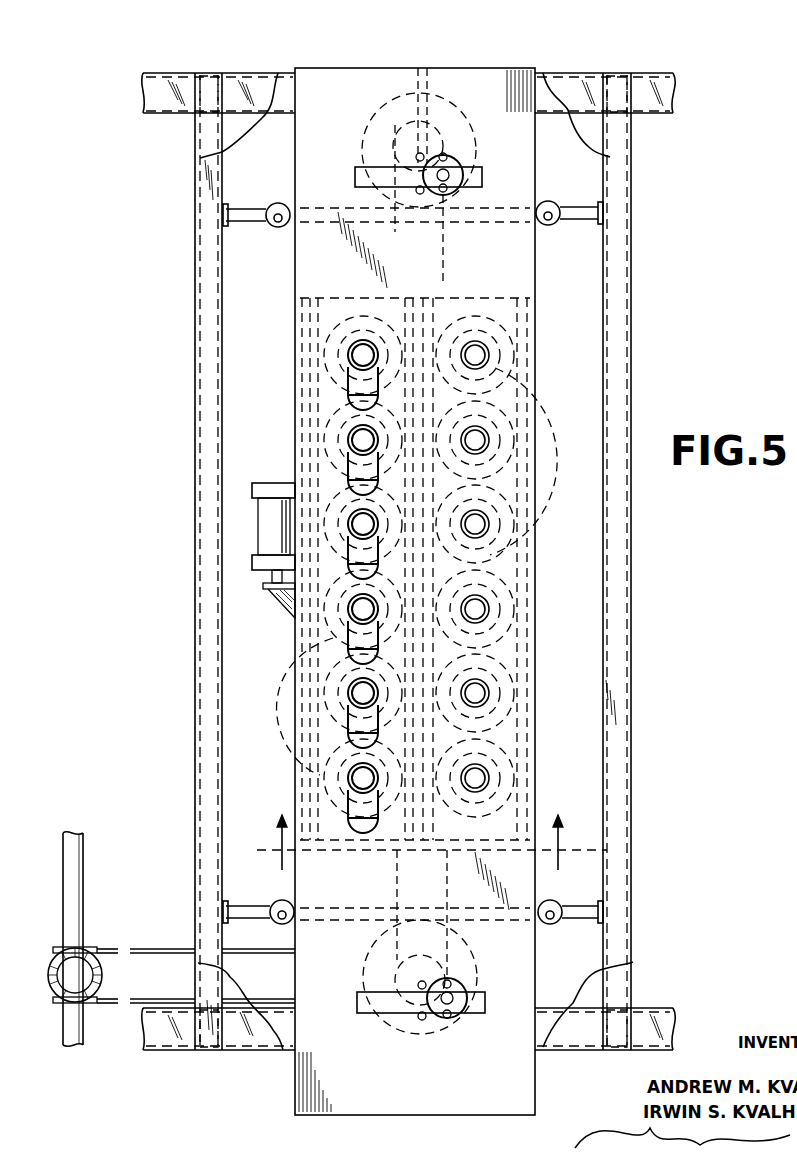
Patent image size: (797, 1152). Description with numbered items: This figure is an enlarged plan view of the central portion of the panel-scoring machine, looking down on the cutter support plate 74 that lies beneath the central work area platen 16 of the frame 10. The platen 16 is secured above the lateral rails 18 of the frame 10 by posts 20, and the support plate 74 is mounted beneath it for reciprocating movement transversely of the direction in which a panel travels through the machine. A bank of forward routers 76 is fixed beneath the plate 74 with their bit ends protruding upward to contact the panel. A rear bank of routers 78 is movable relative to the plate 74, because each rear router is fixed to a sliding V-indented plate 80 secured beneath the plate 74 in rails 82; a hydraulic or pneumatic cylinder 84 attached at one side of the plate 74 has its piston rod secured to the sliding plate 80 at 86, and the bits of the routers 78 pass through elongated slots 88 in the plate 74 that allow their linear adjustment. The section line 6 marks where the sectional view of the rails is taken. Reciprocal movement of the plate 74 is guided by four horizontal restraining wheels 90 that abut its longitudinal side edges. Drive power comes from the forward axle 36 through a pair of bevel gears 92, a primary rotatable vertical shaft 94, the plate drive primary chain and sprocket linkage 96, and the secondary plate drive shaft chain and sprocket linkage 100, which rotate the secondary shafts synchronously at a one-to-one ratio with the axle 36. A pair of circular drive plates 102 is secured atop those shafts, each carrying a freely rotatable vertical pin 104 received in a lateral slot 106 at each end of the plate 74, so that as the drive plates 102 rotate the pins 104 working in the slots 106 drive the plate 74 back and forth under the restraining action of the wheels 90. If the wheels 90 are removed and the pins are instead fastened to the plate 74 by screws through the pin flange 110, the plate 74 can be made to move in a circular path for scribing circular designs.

The section line 6— 6 is at (431, 846).
The frame 10 is at (210, 440).
The central work area platen 16 is at (250, 90).
The lateral rails 18 is at (540, 90).
The posts 20 is at (192, 108).
The forward axle 36 is at (70, 880).
The cutter support plate 74 is at (498, 90).
The forward routers 76 is at (525, 452).
The rear bank of routers 78 is at (300, 705).
The sliding V-indented plate 80 is at (345, 298).
The rails 82 is at (423, 298).
The hydraulic or pneumatic cylinder 84 is at (266, 483).
The piston rod attachment 86 is at (282, 598).
The slots 88 is at (355, 383).
The horizontal restraining wheels 90 is at (278, 227).
The bevel gears 92 is at (100, 975).
The primary rotatable vertical shaft 94 is at (40, 985).
The plate drive primary chain and sprocket linkage 96 is at (168, 948).
The secondary plate drive shaft chain and sprocket linkage 100 is at (443, 250).
The circular drive plates 102 is at (362, 140).
The vertical pin 104 is at (448, 178).
The lateral slots 106 is at (357, 176).
The pin flange 110 is at (462, 990).